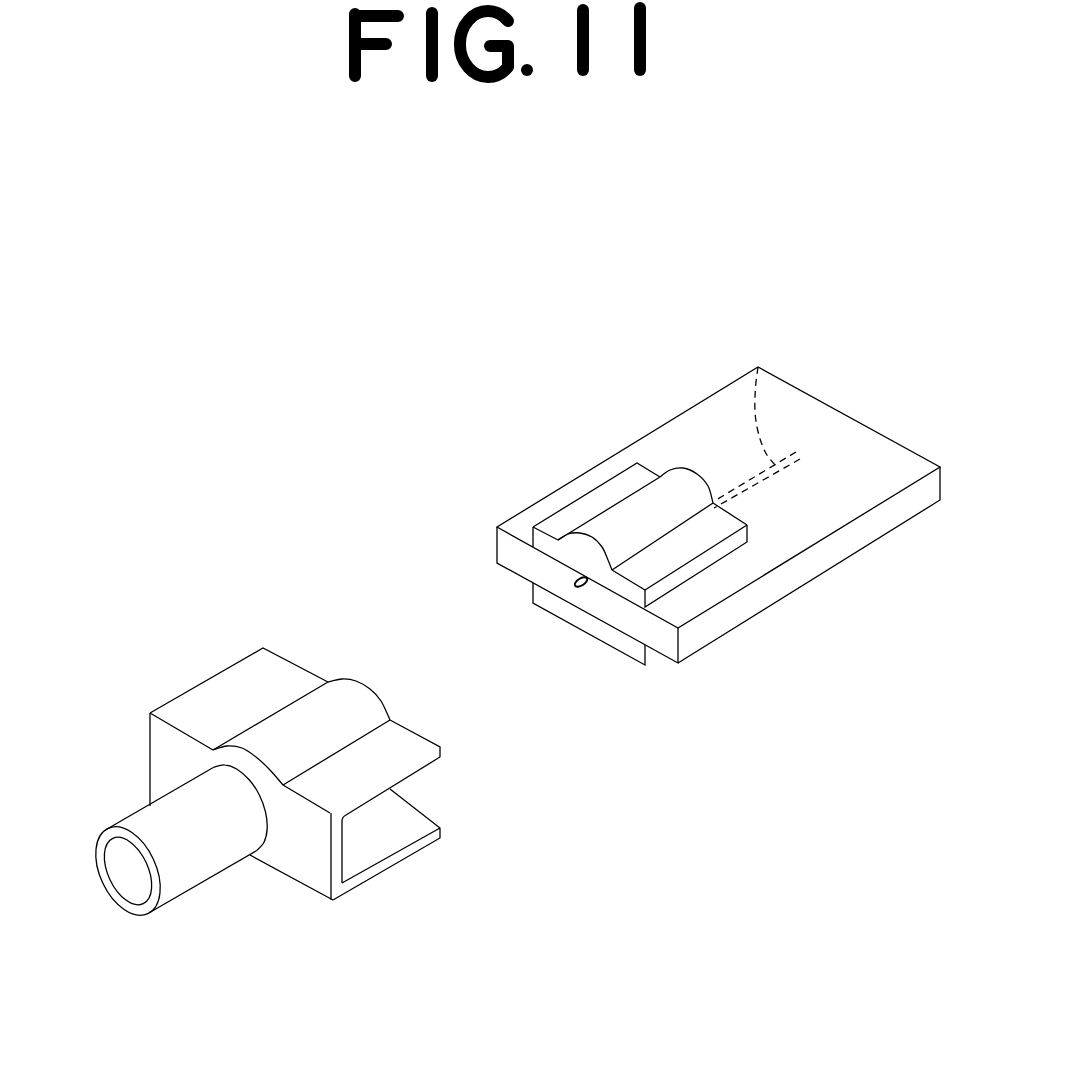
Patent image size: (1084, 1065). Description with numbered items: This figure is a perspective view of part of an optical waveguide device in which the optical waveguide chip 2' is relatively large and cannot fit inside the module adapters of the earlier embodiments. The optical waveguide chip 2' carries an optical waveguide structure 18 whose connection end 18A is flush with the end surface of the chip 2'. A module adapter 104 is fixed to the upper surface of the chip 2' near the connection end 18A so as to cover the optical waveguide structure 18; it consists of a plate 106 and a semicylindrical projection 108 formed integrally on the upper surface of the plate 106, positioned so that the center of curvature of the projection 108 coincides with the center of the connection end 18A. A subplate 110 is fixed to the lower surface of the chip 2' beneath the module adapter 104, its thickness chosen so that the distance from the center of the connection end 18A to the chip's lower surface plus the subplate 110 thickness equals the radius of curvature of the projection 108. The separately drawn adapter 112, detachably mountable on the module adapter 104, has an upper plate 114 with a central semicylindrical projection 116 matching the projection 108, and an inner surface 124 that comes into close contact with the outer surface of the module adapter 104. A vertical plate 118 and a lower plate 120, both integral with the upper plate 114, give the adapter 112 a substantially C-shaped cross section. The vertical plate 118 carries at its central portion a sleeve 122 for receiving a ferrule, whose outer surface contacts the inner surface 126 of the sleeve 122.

The optical waveguide chip 2' is at (718, 516).
The optical waveguide structure 18 is at (757, 367).
The connection end 18A is at (578, 585).
The module adapter 104 is at (652, 562).
The plate 106 is at (582, 503).
The semicylindrical projection 108 is at (672, 488).
The subplate 110 is at (628, 650).
The adapter 112 is at (317, 793).
The upper plate 114 is at (253, 668).
The semicylindrical projection 116 is at (332, 683).
The vertical plate 118 is at (300, 872).
The lower plate 120 is at (377, 853).
The sleeve 122 is at (165, 904).
The inner surface 124 is at (413, 775).
The inner surface 126 is at (127, 890).